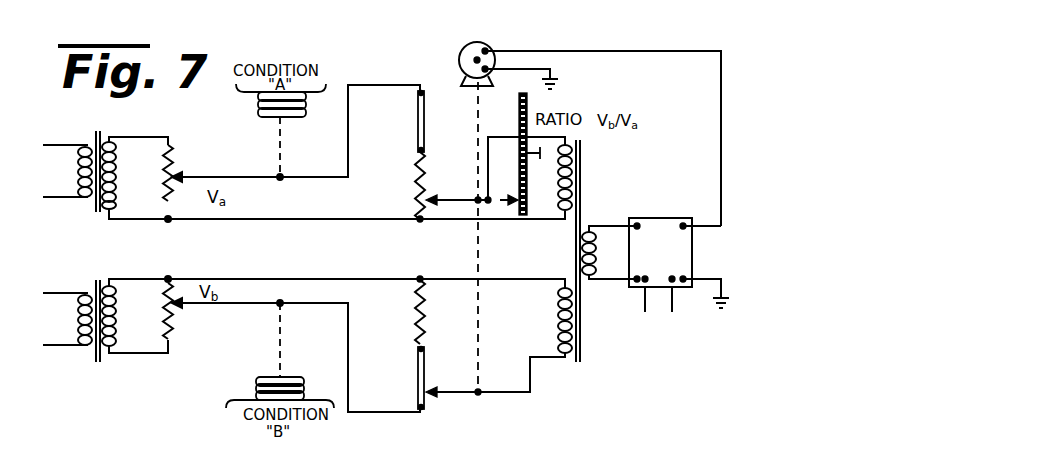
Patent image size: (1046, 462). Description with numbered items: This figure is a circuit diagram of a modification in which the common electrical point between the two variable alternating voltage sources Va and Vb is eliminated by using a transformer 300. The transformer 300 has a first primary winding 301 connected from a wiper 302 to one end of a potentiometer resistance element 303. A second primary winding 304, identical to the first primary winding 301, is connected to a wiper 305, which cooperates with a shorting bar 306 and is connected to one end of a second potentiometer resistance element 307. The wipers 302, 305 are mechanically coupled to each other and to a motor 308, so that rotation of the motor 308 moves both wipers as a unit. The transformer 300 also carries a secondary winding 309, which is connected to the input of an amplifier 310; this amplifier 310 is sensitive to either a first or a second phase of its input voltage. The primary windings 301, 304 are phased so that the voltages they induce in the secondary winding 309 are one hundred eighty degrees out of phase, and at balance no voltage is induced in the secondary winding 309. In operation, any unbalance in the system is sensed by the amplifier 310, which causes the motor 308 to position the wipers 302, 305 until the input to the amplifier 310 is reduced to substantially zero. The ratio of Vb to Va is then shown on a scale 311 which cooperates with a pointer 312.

The transformer 300 is at (581, 251).
The first primary winding 301 is at (552, 179).
The wiper 302 is at (430, 199).
The potentiometer resistance element 303 is at (419, 193).
The second primary winding 304 is at (558, 331).
The wiper 305 is at (431, 394).
The shorting bar 306 is at (418, 392).
The potentiometer resistance element 307 is at (418, 315).
The motor 308 is at (489, 48).
The secondary winding 309 is at (597, 268).
The amplifier 310 is at (676, 218).
The scale 311 is at (519, 133).
The pointer 312 is at (517, 200).